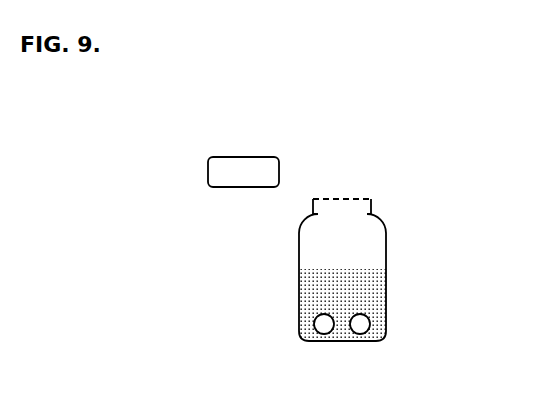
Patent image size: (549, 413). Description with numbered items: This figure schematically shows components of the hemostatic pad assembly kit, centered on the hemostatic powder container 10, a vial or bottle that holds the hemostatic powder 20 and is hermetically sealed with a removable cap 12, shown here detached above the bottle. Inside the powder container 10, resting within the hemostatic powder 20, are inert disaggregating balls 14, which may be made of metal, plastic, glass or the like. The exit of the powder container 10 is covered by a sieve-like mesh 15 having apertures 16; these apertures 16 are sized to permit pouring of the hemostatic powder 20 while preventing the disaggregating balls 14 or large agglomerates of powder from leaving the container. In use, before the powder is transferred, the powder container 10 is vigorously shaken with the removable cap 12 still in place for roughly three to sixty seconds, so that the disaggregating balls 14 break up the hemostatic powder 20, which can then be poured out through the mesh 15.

The hemostatic powder container 10 is at (386, 233).
The removable cap 12 is at (253, 157).
The disaggregating ball 14 is at (362, 327).
The sieve-like mesh 15 is at (340, 190).
The apertures 16 is at (364, 199).
The hemostatic powder 20 is at (370, 300).